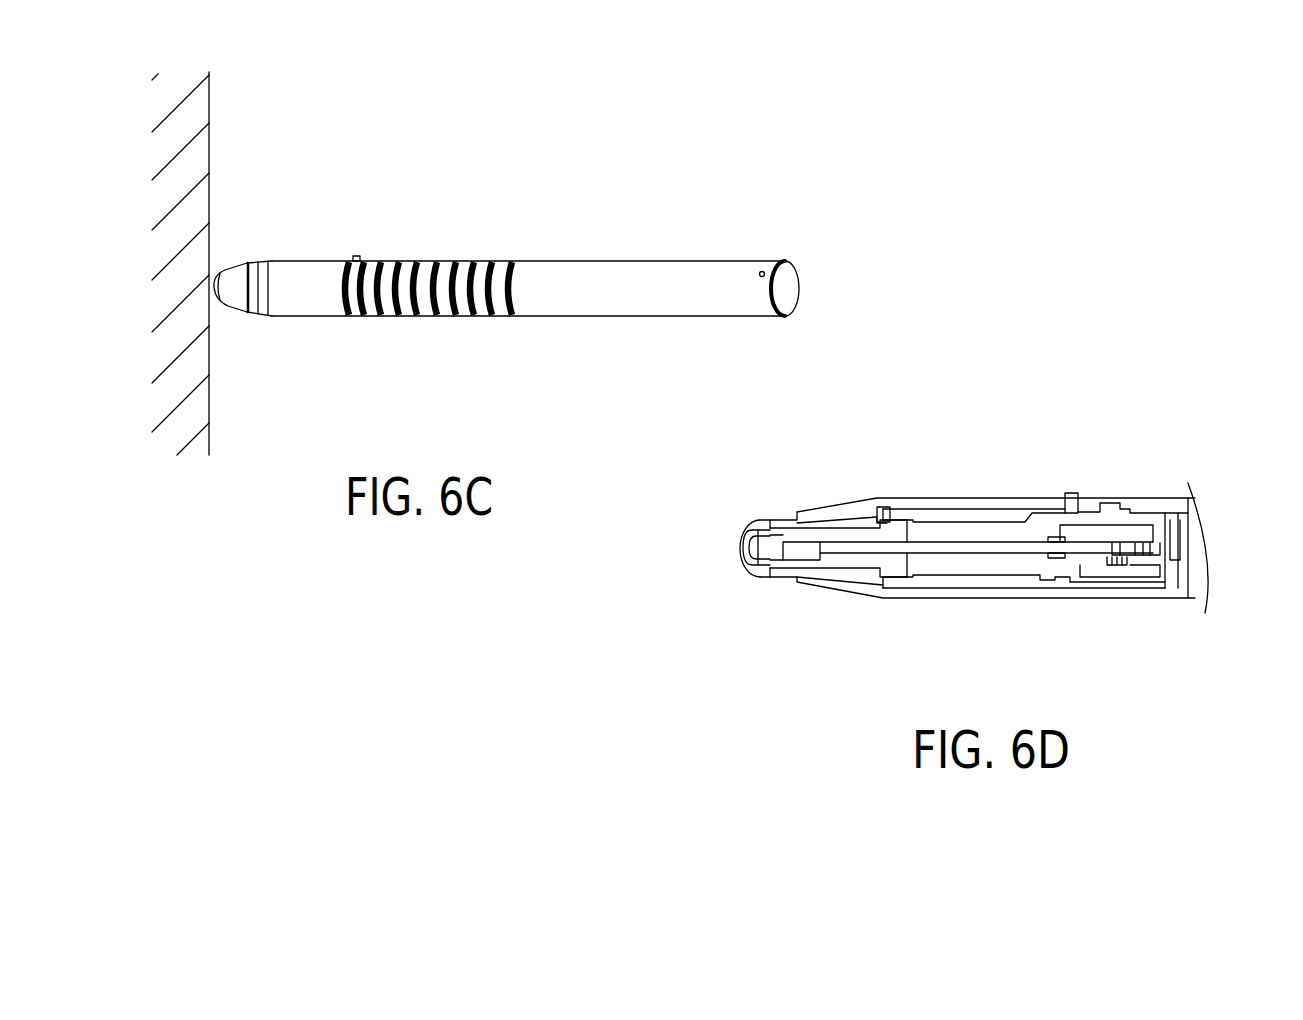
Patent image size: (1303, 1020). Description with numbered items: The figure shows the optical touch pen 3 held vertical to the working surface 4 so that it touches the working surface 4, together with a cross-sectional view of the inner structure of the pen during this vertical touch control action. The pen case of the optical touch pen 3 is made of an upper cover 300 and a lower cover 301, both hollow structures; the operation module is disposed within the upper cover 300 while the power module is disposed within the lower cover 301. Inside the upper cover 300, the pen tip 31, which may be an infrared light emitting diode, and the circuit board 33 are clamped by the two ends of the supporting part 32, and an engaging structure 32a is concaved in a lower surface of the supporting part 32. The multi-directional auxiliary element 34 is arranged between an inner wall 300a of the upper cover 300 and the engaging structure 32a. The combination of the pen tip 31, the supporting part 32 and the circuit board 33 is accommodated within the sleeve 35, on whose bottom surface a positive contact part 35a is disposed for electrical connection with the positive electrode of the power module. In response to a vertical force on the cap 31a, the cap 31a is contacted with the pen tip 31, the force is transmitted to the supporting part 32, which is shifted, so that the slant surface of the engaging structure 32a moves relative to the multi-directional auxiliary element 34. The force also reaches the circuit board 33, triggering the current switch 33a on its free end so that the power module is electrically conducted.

In FIG. 6C, the optical touch pen 3 is at (506, 210).
In FIG. 6C, the working surface 4 is at (195, 110).
In FIG. 6C, the upper cover 300 is at (307, 283).
In FIG. 6D, the upper cover 300 is at (983, 497).
In FIG. 6D, the inner wall 300a is at (853, 512).
In FIG. 6C, the lower cover 301 is at (620, 287).
In FIG. 6D, the pen tip 31 is at (755, 550).
In FIG. 6C, the cap 31a is at (217, 283).
In FIG. 6D, the cap 31a is at (767, 520).
In FIG. 6D, the supporting part 32 is at (853, 562).
In FIG. 6D, the engaging structure 32a is at (877, 521).
In FIG. 6D, the circuit board 33 is at (1002, 548).
In FIG. 6D, the current switch 33a is at (1140, 560).
In FIG. 6D, the multi-directional auxiliary element 34 is at (886, 517).
In FIG. 6D, the sleeve 35 is at (1167, 532).
In FIG. 6D, the positive contact part 35a is at (1162, 558).